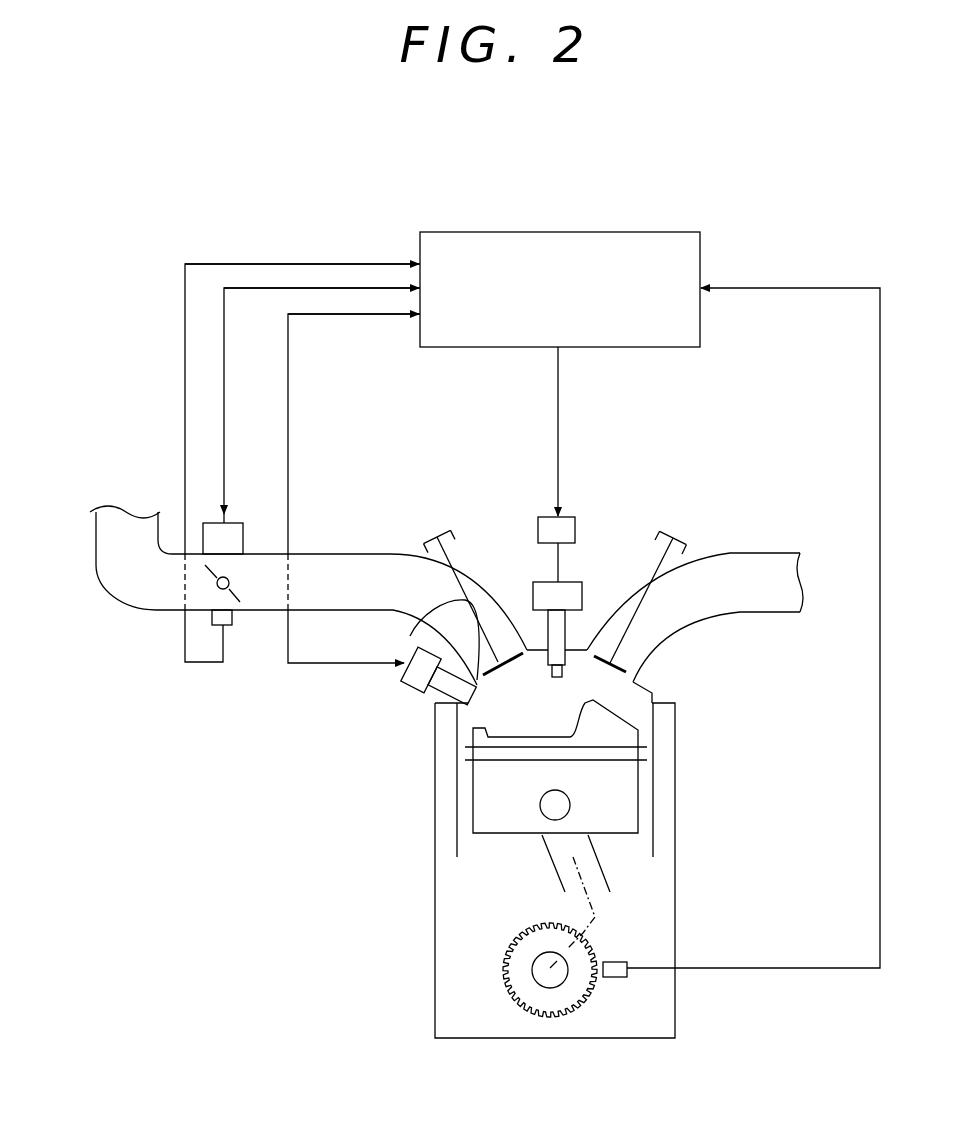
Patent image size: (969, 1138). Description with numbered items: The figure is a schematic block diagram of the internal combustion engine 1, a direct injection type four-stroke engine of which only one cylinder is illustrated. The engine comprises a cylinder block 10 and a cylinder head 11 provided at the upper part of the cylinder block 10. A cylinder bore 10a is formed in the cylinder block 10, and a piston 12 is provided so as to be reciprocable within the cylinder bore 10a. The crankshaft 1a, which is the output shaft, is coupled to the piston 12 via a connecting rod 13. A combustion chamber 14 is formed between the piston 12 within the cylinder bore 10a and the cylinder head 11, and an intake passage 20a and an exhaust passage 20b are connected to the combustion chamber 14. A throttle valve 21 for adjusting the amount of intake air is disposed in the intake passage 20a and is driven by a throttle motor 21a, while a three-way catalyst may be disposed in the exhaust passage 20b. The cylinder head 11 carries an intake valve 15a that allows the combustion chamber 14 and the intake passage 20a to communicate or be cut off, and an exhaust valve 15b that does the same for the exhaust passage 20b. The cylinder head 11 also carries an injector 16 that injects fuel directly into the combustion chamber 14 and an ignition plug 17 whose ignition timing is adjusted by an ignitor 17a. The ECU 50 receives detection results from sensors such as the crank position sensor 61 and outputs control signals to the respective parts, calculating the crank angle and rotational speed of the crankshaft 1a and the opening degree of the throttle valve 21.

The internal combustion engine 1 is at (431, 832).
The crankshaft 1a is at (540, 968).
The cylinder block 10 is at (680, 826).
The cylinder bore 10a is at (465, 776).
The cylinder head 11 is at (575, 648).
The piston 12 is at (493, 835).
The connecting rod 13 is at (593, 868).
The combustion chamber 14 is at (512, 728).
The intake valve 15a is at (428, 620).
The exhaust valve 15b is at (648, 640).
The injector 16 is at (412, 688).
The ignition plug 17 is at (570, 580).
The ignitor 17a is at (546, 544).
The intake passage 20a is at (352, 604).
The exhaust passage 20b is at (720, 608).
The throttle valve 21 is at (218, 586).
The throttle motor 21a is at (233, 522).
The ECU 50 is at (640, 232).
The crank position sensor 61 is at (232, 622).